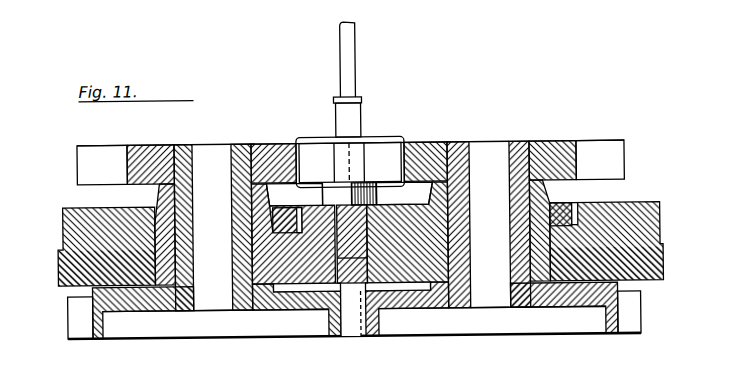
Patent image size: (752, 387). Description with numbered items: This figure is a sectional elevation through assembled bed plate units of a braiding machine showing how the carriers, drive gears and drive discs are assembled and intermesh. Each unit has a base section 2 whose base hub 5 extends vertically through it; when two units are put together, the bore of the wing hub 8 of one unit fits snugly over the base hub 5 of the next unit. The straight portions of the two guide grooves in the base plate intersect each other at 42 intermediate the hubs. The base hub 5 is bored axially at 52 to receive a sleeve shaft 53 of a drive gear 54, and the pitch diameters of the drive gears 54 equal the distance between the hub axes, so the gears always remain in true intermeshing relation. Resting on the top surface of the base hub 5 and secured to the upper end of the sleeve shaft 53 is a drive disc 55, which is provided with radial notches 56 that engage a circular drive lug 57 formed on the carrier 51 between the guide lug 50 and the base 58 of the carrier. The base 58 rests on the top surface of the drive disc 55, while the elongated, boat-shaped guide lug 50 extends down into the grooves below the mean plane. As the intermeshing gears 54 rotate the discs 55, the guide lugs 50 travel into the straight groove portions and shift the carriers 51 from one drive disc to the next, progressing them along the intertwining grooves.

The base section 2 is at (63, 229).
The base hub 5 is at (160, 188).
The wing hub 8 is at (300, 204).
The intersection of straight groove portions 42 is at (367, 242).
The guide-drive lug 50 is at (353, 247).
The carrier 51 is at (358, 114).
The axial bore 52 is at (173, 248).
The sleeve shaft 53 is at (236, 240).
The drive gear 54 is at (178, 331).
The drive disc 55 is at (157, 143).
The radial notch 56 is at (350, 162).
The circular drive lug 57 is at (357, 152).
The carrier base 58 is at (315, 136).